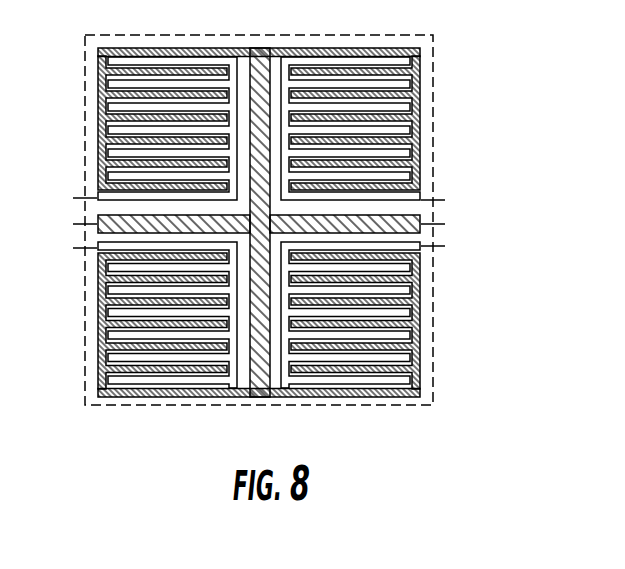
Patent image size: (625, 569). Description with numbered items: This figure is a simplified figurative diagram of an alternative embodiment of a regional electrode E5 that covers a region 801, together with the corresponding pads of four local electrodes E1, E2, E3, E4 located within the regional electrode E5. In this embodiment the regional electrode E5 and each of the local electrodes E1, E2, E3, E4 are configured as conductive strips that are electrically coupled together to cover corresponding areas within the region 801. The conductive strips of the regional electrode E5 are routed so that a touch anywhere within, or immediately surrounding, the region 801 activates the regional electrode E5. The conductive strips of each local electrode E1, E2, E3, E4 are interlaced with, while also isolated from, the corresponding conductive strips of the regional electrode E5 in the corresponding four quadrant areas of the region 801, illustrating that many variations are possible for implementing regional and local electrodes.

The region 801 is at (433, 90).
The local electrode E1 is at (98, 200).
The local electrode E2 is at (98, 246).
The local electrode E3 is at (420, 201).
The local electrode E4 is at (405, 244).
The regional electrode E5 is at (138, 49).